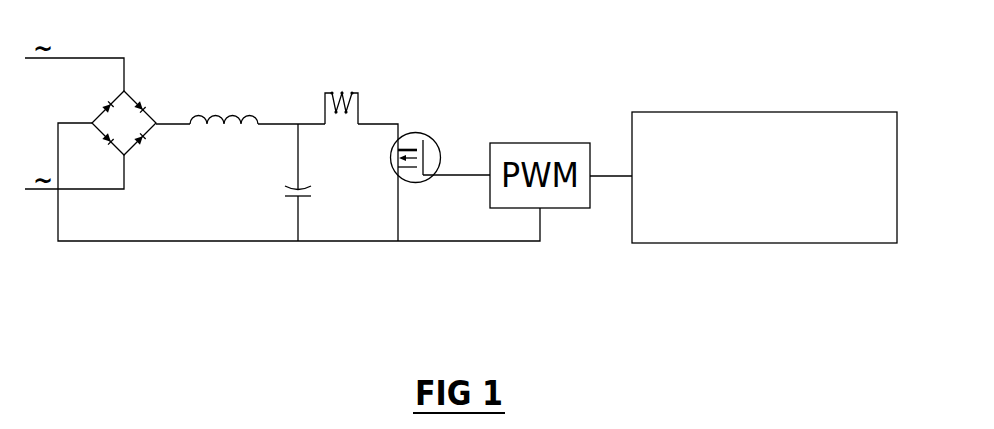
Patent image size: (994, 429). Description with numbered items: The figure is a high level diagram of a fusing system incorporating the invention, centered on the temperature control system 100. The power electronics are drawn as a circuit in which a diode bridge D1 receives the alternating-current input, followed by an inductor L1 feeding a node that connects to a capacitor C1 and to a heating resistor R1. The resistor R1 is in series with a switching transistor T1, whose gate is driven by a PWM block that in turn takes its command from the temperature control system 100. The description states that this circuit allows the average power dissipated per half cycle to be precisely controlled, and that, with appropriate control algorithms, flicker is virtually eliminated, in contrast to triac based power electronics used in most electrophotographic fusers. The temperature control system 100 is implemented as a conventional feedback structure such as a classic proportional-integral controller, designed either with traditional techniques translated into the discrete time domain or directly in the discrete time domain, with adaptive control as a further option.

The diode bridge rectifier D1 is at (104, 112).
The inductor L1 is at (224, 100).
The resistor / heating element R1 is at (346, 89).
The capacitor C1 is at (320, 182).
The transistor (MOSFET) T1 is at (441, 178).
The temperature control system 100 is at (738, 243).